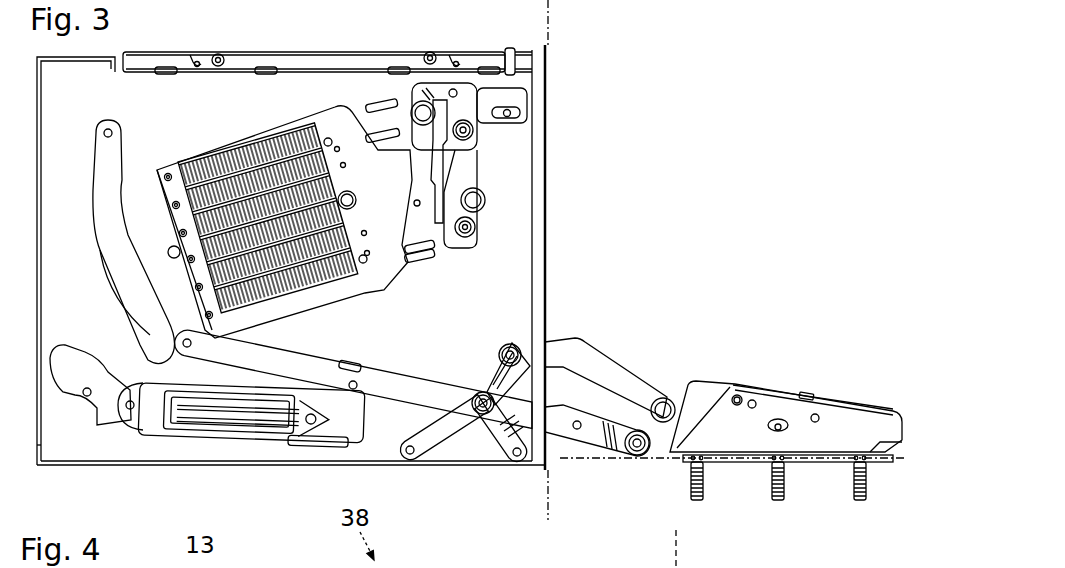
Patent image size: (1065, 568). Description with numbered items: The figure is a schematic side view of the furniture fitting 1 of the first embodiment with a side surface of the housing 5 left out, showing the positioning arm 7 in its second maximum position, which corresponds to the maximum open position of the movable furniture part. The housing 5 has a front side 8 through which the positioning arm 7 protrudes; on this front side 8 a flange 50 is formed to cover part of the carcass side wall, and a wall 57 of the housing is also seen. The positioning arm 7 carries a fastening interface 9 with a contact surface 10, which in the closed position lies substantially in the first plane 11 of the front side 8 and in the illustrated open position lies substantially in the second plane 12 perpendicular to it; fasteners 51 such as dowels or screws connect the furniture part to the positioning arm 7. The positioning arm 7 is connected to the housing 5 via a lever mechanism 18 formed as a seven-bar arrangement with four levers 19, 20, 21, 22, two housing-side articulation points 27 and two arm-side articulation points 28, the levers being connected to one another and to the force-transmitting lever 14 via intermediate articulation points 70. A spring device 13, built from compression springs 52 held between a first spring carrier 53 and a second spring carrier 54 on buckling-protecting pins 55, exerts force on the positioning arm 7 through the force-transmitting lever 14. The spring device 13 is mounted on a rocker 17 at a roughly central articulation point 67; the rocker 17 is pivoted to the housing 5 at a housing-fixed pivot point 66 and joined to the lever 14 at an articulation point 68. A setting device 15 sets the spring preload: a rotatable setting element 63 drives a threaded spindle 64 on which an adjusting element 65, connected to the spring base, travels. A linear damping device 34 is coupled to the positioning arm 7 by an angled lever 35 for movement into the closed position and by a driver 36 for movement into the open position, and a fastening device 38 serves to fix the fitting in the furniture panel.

The furniture fitting 1 is at (740, 47).
The housing 5 is at (60, 454).
The positioning arm 7 is at (795, 360).
The front side 8 is at (552, 150).
The fastening interface 9 is at (741, 500).
The contact surface 10 is at (814, 470).
The first plane 11 is at (546, 492).
The second plane 12 is at (584, 466).
The spring device 13 is at (189, 119).
The force-transmitting lever 14 is at (412, 390).
The setting device 15 is at (503, 169).
The rocker 17 is at (124, 228).
The lever mechanism 18 is at (614, 320).
The lever 19 is at (437, 438).
The lever 20 is at (513, 452).
The lever 21 is at (590, 428).
The lever 22 is at (607, 375).
The articulation point on the housing side 27 is at (409, 458).
The articulation point on the positioning arm side 28 is at (660, 440).
The damping device 34 is at (213, 462).
The angled lever 35 is at (68, 375).
The driver 36 is at (356, 362).
The fastening device 38 is at (290, 36).
The flange 50 is at (538, 103).
The fasteners 51 is at (778, 502).
The springs 52 is at (243, 143).
The first spring carrier 53 is at (165, 218).
The second spring carrier 54 is at (428, 254).
The pins 55 is at (393, 212).
The wall 57 is at (91, 452).
The setting element 63 is at (513, 92).
The threaded spindle 64 is at (441, 144).
The adjusting element 65 is at (492, 206).
The pivot point 66 is at (106, 128).
The articulation point 67 is at (166, 255).
The articulation point 68 is at (194, 343).
The intermediate articulation points 70 is at (484, 392).